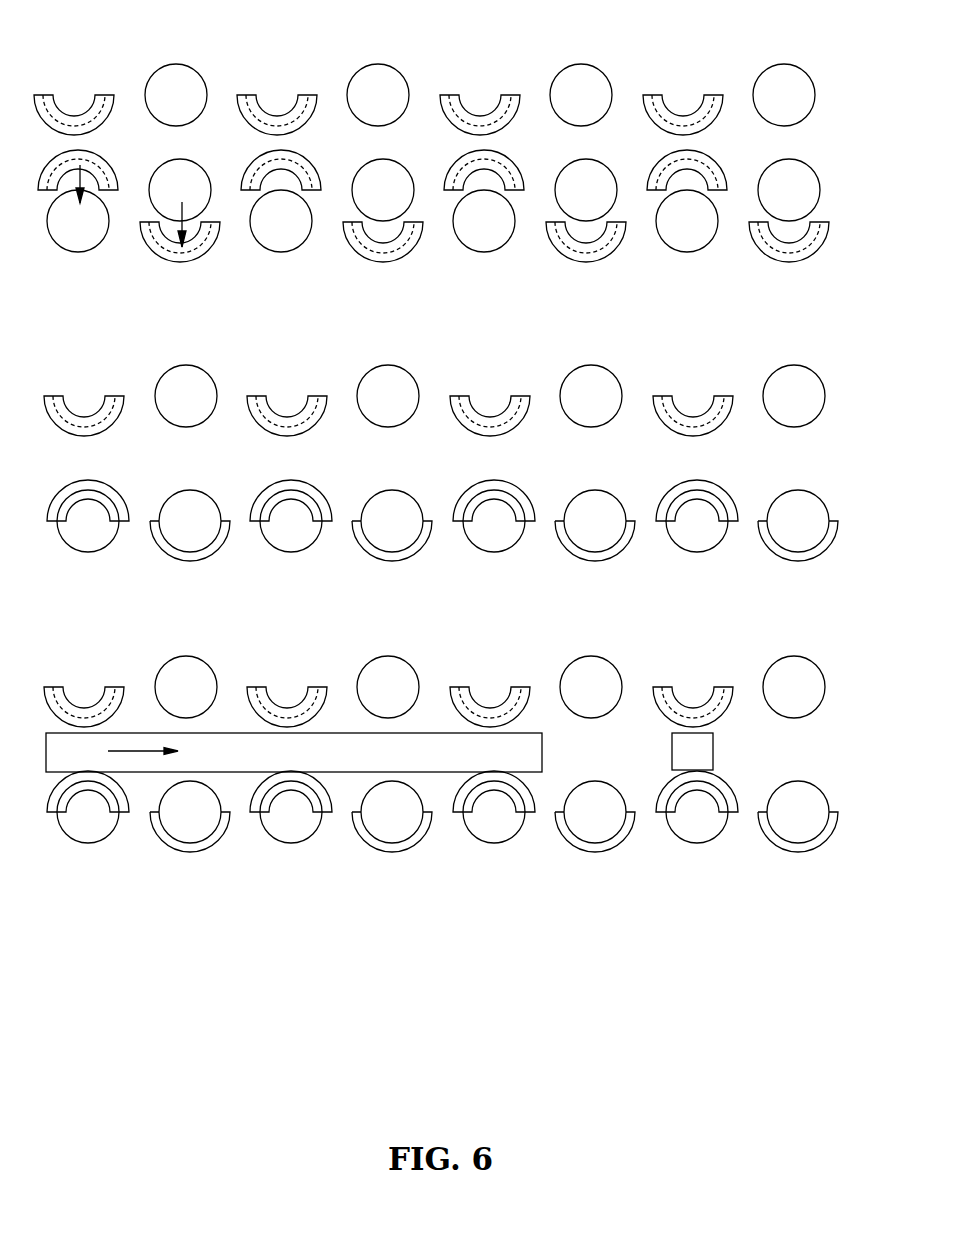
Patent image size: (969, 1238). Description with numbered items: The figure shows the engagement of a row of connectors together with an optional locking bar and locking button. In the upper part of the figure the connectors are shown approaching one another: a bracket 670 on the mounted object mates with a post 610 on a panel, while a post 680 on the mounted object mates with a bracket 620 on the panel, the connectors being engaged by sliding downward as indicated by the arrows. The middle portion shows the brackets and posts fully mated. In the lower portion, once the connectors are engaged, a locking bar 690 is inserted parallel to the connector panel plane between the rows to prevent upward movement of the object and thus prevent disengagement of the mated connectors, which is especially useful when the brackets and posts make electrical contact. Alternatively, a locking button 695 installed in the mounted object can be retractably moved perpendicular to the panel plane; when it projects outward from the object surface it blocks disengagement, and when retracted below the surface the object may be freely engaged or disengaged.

The post 610 is at (80, 257).
The bracket 620 is at (175, 265).
The bracket 670 is at (110, 160).
The post 680 is at (202, 160).
The locking bar 690 is at (47, 775).
The locking button 695 is at (717, 745).